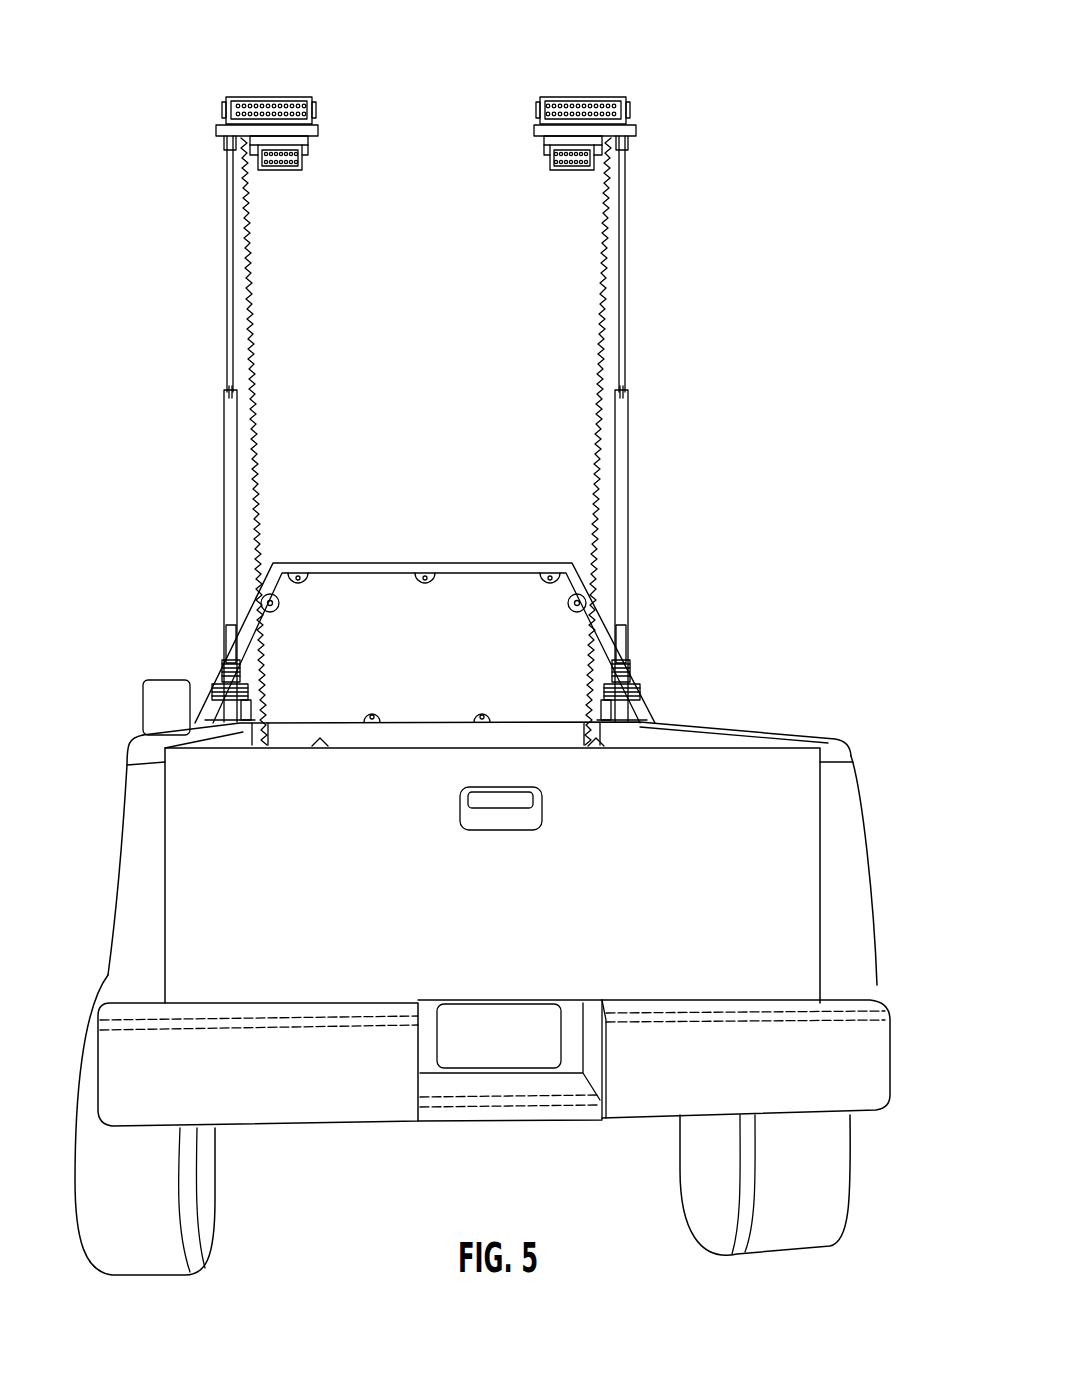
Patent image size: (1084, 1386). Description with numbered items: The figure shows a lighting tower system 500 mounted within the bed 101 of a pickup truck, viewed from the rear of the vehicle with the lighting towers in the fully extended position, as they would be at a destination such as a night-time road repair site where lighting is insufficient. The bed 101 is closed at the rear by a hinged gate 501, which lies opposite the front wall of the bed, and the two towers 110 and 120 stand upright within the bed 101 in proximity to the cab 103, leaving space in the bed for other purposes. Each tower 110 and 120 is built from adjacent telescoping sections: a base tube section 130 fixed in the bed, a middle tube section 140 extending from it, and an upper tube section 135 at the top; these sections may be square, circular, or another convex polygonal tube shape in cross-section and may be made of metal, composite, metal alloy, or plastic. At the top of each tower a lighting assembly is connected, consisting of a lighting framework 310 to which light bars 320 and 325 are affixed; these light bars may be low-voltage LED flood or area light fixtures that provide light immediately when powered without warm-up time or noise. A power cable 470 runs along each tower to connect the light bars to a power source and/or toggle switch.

The lighting tower system 500 is at (800, 100).
The bed 101 is at (500, 977).
The hinged gate 501 is at (622, 914).
The cab 103 is at (403, 562).
The tower 110 is at (220, 326).
The tower 120 is at (642, 434).
The base tube section 130 is at (233, 660).
The upper tube section 135 is at (228, 266).
The middle tube section 140 is at (228, 470).
The lighting framework 310 is at (428, 155).
The light bar 320 is at (314, 99).
The light bar 325 is at (282, 173).
The power cable 470 is at (266, 488).